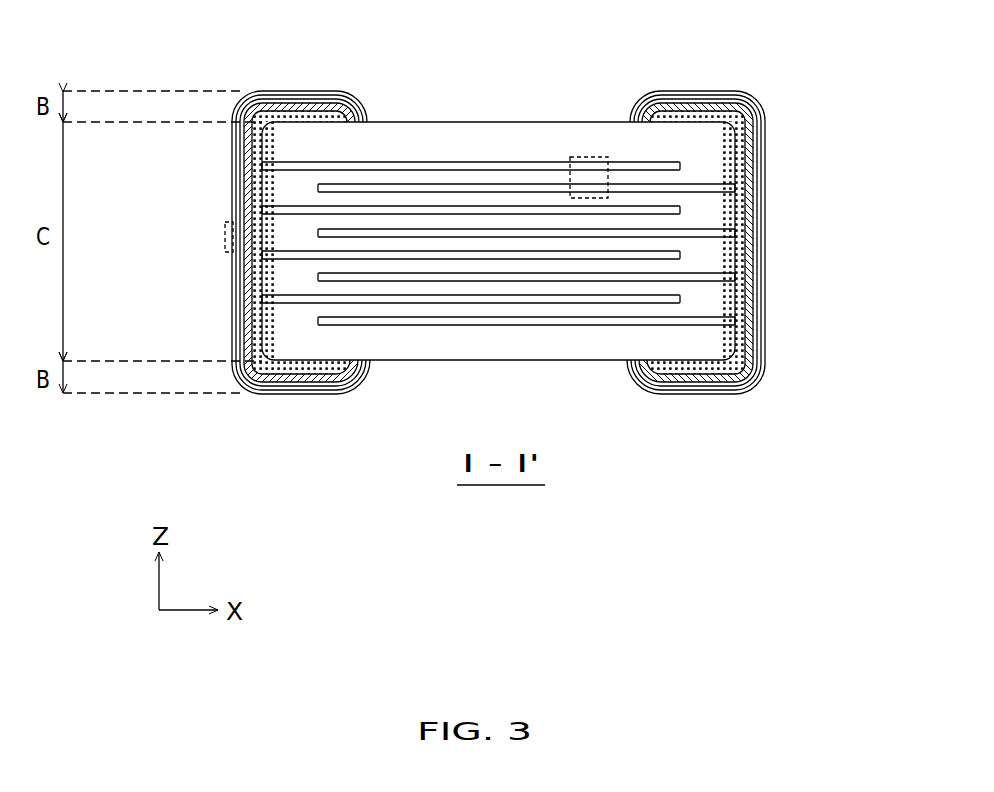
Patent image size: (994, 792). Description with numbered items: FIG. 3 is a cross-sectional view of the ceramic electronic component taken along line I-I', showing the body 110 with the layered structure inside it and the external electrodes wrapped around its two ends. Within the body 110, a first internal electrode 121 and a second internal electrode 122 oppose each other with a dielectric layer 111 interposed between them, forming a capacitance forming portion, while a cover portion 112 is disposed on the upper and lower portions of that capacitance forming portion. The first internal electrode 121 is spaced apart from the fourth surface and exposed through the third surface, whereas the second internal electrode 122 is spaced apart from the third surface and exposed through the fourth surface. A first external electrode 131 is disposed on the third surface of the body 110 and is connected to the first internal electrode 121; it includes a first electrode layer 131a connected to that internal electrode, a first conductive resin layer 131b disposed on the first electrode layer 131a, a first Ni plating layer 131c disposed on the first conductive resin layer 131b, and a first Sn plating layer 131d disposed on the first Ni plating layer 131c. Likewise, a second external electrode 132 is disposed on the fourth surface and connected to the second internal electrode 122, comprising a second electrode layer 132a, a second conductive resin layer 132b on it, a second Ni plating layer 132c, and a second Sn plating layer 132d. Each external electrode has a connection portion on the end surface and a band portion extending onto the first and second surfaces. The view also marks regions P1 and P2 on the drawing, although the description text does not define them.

The body 110 is at (432, 122).
The dielectric layer 111 is at (383, 204).
The cover portion 112 is at (483, 140).
The first internal electrode 121 is at (545, 164).
The second internal electrode 122 is at (623, 190).
The first external electrode 131 is at (229, 242).
The first electrode layer 131a is at (232, 266).
The first conductive resin layer 131b is at (237, 291).
The first Ni plating layer 131c is at (242, 317).
The first Sn plating layer 131d is at (247, 344).
The second external electrode 132 is at (769, 242).
The second electrode layer 132a is at (767, 233).
The second conductive resin layer 132b is at (762, 259).
The second Ni plating layer 132c is at (757, 286).
The second Sn plating layer 132d is at (750, 313).
The first region P1 is at (225, 238).
The second region P2 is at (588, 157).